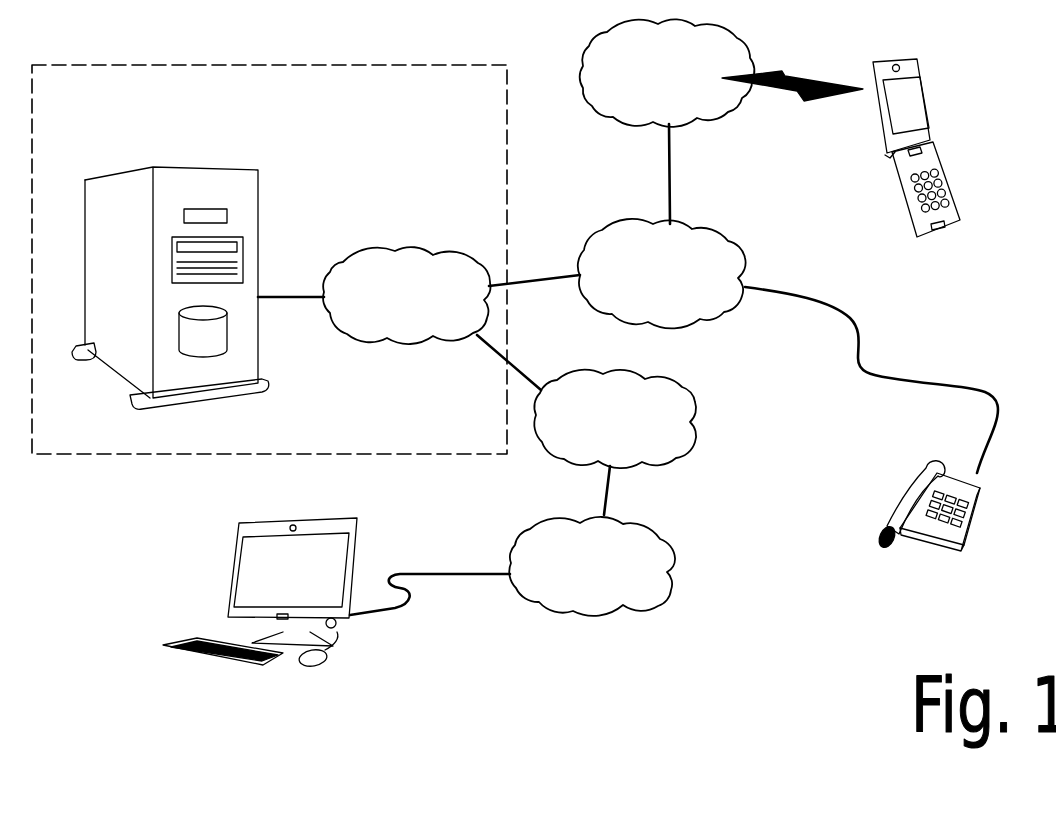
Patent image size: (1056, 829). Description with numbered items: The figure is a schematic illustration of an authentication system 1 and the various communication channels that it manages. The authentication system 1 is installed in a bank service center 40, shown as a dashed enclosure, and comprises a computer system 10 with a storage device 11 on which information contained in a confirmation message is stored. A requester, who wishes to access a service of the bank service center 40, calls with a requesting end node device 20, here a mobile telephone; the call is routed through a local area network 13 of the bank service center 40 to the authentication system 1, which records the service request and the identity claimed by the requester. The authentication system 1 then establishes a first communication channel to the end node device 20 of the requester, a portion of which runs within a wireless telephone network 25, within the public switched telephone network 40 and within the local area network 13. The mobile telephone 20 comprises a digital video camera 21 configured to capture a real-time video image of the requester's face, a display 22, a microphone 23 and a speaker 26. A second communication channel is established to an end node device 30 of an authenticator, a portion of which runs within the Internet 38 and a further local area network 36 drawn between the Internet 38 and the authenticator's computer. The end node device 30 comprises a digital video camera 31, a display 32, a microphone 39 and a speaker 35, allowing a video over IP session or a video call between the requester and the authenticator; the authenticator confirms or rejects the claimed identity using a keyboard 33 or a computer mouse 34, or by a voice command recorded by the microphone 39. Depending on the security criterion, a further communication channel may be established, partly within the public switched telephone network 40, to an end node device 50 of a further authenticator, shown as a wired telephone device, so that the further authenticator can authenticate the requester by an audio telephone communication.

The authentication system 1 is at (197, 153).
The computer system 10 is at (153, 167).
The storage device 11 is at (210, 345).
The local area network 13 is at (380, 250).
The bank service center / public switched telephone network 40 is at (303, 65).
The wireless telephone network 25 is at (688, 127).
The end node device of the requester 20 is at (936, 187).
The digital video camera 21 is at (900, 65).
The display 22 is at (905, 103).
The speaker 26 is at (925, 152).
The microphone 23 is at (965, 217).
The Internet 38 is at (700, 405).
The LAN 36 is at (680, 545).
The end node device of the further authenticator 50 is at (889, 492).
The end node device of the authenticator 30 is at (242, 594).
The digital video camera 31 is at (290, 525).
The display 32 is at (250, 560).
The microphone 39 is at (282, 620).
The speaker 35 is at (338, 628).
The keyboard 33 is at (195, 650).
The computer mouse 34 is at (318, 660).